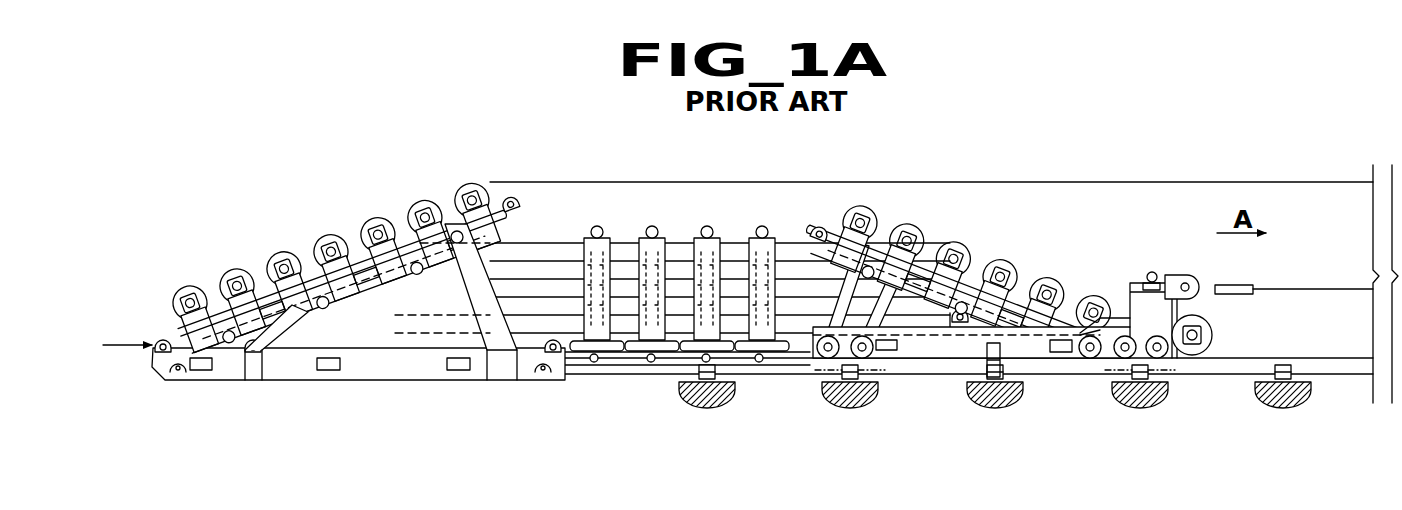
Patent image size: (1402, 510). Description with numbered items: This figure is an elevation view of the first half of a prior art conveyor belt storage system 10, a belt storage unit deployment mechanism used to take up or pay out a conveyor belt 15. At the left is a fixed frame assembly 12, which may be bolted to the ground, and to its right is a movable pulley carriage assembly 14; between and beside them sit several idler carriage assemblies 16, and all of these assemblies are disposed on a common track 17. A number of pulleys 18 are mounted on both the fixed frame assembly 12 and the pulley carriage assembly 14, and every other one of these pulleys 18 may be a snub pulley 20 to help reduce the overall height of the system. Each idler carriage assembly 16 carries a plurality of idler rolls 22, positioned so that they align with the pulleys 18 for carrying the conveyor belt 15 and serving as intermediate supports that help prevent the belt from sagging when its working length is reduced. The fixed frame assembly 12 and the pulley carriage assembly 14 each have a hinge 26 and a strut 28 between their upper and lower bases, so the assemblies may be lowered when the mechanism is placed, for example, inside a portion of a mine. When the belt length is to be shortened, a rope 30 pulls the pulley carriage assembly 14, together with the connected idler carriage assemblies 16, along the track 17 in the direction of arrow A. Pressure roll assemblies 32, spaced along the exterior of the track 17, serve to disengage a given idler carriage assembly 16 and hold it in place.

The conveyor belt storage system 10 is at (1200, 106).
The fixed frame assembly 12 is at (268, 408).
The pulley carriage assembly 14 is at (1058, 396).
The conveyor belt 15 is at (526, 244).
The idler carriage assemblies 16 is at (680, 248).
The track 17 is at (812, 382).
The pulleys 18 is at (180, 295).
The snub pulley 20 is at (236, 275).
The idler rolls 22 is at (595, 265).
The hinge 26 is at (275, 349).
The strut 28 is at (502, 325).
The rope 30 is at (1312, 288).
The pressure roll assemblies 32 is at (690, 395).